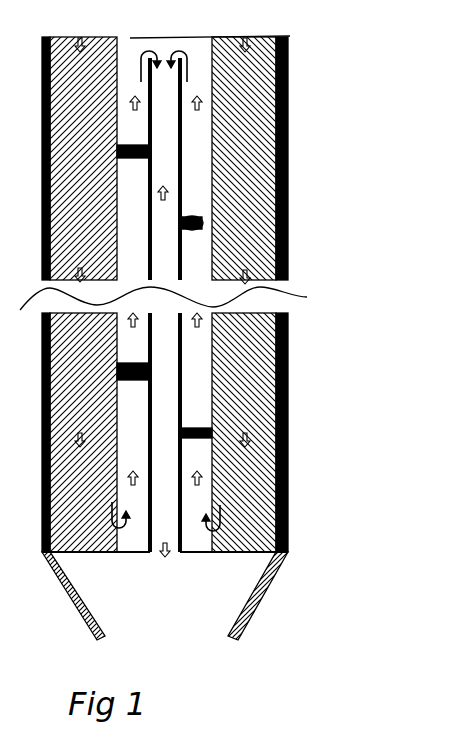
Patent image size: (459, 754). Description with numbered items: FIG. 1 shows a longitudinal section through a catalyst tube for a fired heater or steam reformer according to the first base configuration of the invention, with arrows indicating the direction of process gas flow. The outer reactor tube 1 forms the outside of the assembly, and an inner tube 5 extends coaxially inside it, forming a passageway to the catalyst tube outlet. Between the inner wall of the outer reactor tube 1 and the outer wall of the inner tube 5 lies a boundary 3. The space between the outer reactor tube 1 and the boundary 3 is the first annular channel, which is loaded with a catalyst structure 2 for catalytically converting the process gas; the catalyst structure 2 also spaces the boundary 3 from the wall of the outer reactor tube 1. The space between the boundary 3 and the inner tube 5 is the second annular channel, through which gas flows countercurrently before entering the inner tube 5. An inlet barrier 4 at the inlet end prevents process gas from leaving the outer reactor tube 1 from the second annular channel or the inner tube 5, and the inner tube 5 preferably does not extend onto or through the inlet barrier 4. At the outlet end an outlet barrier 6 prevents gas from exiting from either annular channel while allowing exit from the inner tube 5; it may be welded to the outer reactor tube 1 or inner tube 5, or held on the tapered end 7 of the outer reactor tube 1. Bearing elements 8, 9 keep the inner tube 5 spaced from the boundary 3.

The outer reactor tube 1 is at (288, 133).
The catalyst structure 2 is at (183, 222).
The boundary 3 is at (212, 382).
The inlet barrier 4 is at (290, 36).
The inner tube 5 is at (180, 349).
The outlet barrier 6 is at (278, 550).
The tapered end 7 is at (262, 588).
The bearing element 8 is at (183, 226).
The bearing element 9 is at (183, 218).